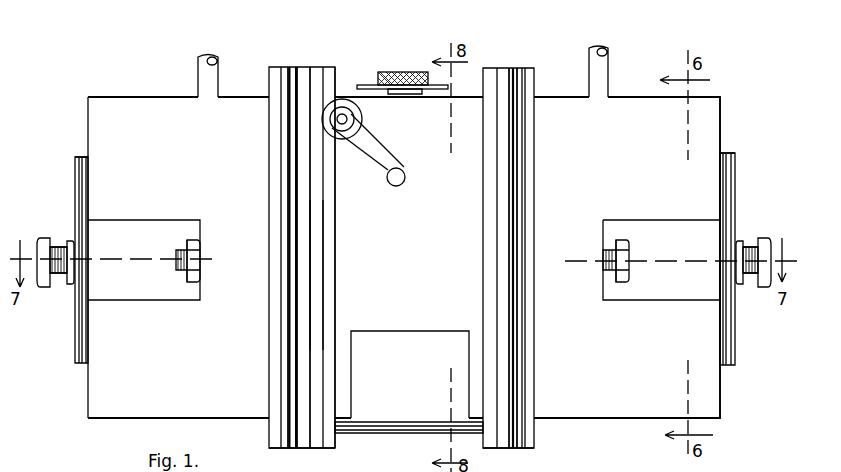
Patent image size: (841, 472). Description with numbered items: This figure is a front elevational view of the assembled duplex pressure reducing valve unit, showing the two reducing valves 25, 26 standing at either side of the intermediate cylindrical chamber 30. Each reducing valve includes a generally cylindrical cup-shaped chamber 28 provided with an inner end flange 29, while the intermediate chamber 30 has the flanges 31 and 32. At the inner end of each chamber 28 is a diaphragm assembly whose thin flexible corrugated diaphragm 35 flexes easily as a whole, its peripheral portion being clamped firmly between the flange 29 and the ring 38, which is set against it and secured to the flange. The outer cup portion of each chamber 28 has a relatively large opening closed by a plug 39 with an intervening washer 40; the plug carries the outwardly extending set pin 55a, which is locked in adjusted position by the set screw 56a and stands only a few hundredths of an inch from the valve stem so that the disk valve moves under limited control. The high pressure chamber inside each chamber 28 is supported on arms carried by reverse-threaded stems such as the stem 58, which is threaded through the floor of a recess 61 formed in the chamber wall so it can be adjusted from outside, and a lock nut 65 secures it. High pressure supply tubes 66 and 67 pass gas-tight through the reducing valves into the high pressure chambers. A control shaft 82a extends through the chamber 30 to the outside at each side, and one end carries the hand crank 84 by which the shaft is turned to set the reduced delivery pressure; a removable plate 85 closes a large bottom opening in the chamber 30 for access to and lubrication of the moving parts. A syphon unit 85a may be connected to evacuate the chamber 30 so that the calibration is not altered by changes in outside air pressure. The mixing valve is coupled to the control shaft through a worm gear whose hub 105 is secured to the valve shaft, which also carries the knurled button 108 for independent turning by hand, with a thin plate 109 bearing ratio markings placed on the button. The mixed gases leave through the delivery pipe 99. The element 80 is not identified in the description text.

The reducing valve 25 is at (137, 412).
The reducing valve 26 is at (616, 410).
The cylindrical chamber 28 is at (404, 257).
The inner end flange 29 is at (284, 72).
The intermediate cylindrical chamber 30 is at (474, 88).
The flange 31 is at (329, 72).
The flange 32 is at (487, 72).
The diaphragm 35 is at (292, 72).
The ring 38 is at (302, 440).
The plug 39 is at (78, 173).
The washer 40 is at (80, 157).
The set pin 55a is at (750, 304).
The set screw 56a is at (752, 220).
The stem 58 is at (178, 264).
The recess 61 is at (146, 230).
The lock nut 65 is at (192, 280).
The high pressure supply tube 66 is at (200, 68).
The high pressure supply tube 67 is at (598, 60).
The column rail 80 is at (316, 277).
The control shaft 82a is at (343, 116).
The hand crank 84 is at (360, 140).
The removable plate 85 is at (390, 434).
The syphon unit 85a is at (650, 471).
The delivery pipe 99 is at (590, 468).
The hub 105 is at (418, 95).
The knurled button 108 is at (402, 72).
The plate 109 is at (362, 85).